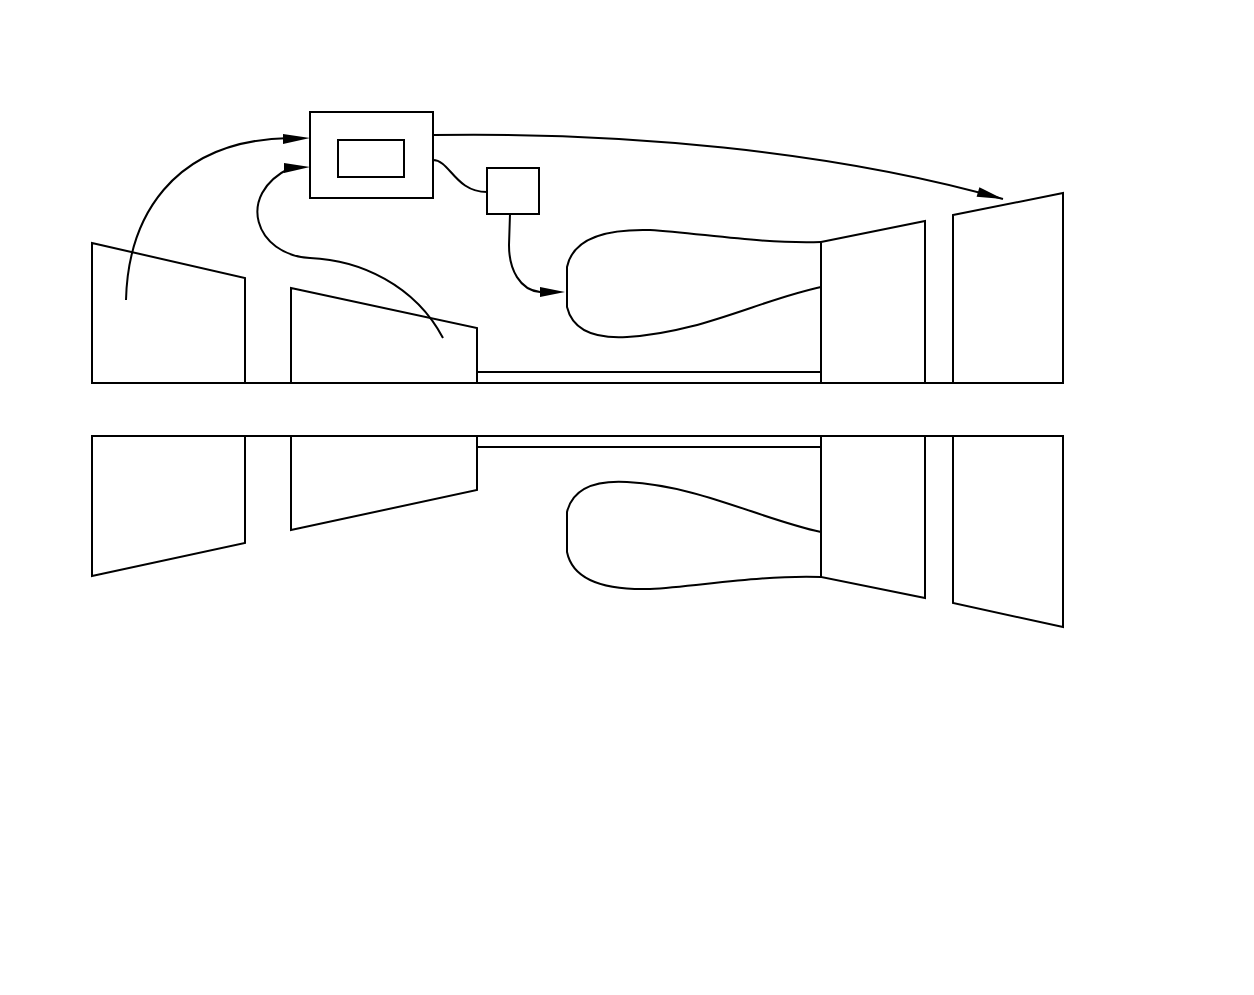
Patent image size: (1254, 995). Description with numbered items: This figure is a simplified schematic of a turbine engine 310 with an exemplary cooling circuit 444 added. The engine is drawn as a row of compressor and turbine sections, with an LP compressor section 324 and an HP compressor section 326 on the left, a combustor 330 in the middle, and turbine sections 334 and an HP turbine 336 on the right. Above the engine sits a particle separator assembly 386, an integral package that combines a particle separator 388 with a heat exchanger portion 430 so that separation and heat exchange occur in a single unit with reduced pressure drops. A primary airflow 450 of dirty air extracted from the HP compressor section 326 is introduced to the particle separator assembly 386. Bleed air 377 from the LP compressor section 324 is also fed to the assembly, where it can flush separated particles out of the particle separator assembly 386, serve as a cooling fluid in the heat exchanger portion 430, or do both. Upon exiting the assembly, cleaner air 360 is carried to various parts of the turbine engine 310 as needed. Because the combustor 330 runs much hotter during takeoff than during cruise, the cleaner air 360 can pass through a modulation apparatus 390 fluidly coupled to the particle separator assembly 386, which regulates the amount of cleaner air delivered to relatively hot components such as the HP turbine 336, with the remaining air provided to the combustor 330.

The turbine engine 310 is at (1087, 258).
The LP compressor section 324 is at (182, 548).
The HP compressor section 326 is at (357, 507).
The combustor 330 is at (638, 265).
The HP turbine 334 is at (882, 552).
The HP turbine 336 is at (1005, 573).
The cleaner air 360 is at (803, 160).
The bleed air 377 is at (187, 168).
The particle separator assembly 386 is at (388, 102).
The particle separator 388 is at (413, 125).
The modulation apparatus 390 is at (523, 187).
The heat exchanger portion 430 is at (372, 167).
The cooling circuit 444 is at (752, 102).
The primary airflow 450 is at (273, 243).